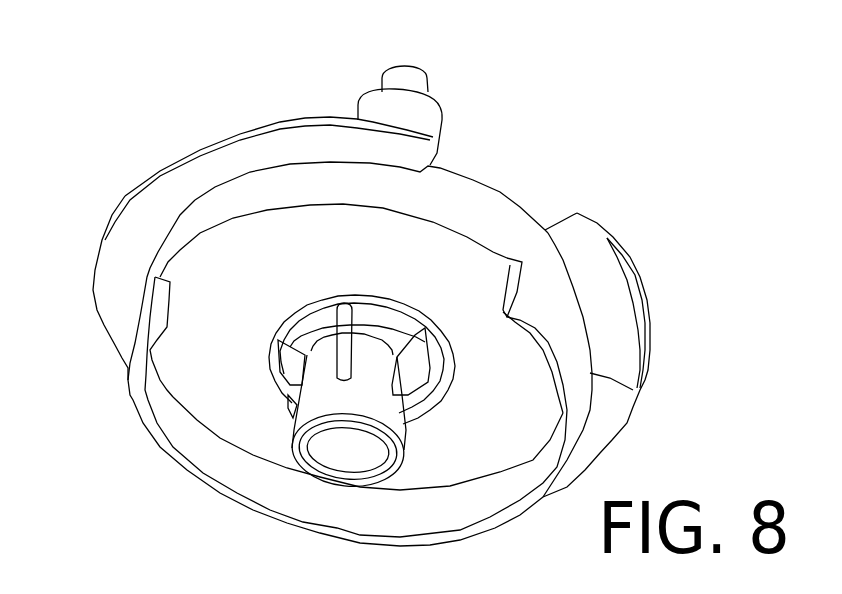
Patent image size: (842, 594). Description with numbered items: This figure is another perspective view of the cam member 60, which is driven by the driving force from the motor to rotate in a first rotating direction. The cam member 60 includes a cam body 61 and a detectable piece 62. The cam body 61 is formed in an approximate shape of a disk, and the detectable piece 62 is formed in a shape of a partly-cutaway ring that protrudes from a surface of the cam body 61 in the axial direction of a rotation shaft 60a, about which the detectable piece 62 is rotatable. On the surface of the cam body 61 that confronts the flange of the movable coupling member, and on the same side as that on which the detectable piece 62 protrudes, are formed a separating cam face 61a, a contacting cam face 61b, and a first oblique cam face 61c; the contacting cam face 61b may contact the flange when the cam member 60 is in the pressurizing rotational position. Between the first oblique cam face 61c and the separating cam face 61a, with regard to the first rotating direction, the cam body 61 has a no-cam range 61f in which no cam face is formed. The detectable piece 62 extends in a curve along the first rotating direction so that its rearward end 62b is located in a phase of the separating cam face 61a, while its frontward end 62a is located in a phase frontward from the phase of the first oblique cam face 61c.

The cam member 60 is at (346, 261).
The rotation shaft 60a is at (358, 112).
The cam body 61 is at (321, 328).
The separating cam face 61a is at (279, 141).
The contacting cam face 61b is at (640, 435).
The first oblique cam face 61c is at (643, 300).
The no-cam range 61f is at (528, 178).
The detectable piece 62 is at (331, 370).
The frontward end 62a is at (531, 283).
The rearward end 62b is at (97, 337).